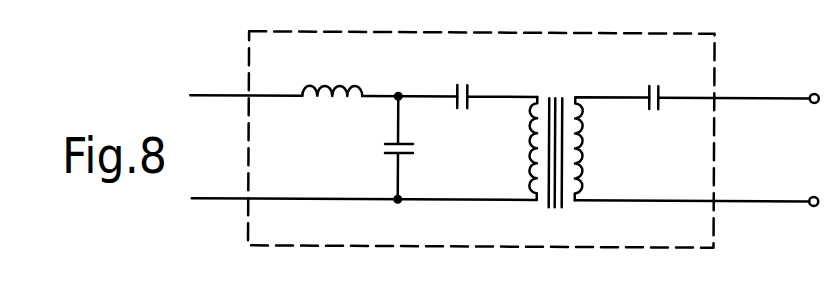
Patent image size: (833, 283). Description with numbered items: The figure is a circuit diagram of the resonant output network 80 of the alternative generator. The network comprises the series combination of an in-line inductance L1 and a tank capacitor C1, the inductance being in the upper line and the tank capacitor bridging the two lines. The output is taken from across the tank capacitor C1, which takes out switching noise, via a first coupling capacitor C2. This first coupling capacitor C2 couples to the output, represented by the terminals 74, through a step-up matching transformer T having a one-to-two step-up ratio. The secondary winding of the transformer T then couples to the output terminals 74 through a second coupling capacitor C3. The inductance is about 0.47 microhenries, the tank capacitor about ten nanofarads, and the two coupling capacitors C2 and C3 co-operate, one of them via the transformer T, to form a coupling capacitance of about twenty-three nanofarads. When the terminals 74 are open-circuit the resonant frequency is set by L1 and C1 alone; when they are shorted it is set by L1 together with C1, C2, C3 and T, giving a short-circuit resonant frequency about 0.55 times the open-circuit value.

The resonant output network 80 is at (679, 32).
The output terminals 74 is at (816, 92).
The step-up matching transformer T is at (567, 208).
The in-line inductance L1 is at (332, 72).
The tank capacitor C1 is at (387, 147).
The first coupling capacitor C2 is at (466, 80).
The second coupling capacitor C3 is at (653, 81).